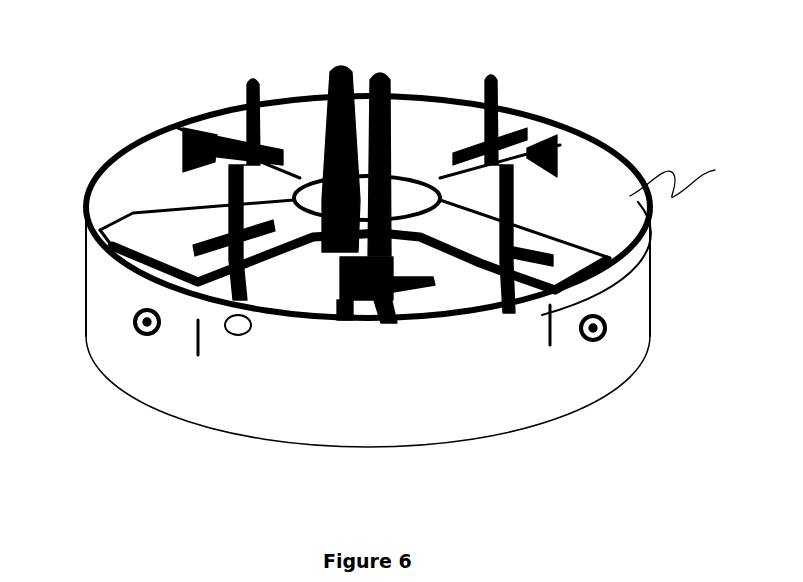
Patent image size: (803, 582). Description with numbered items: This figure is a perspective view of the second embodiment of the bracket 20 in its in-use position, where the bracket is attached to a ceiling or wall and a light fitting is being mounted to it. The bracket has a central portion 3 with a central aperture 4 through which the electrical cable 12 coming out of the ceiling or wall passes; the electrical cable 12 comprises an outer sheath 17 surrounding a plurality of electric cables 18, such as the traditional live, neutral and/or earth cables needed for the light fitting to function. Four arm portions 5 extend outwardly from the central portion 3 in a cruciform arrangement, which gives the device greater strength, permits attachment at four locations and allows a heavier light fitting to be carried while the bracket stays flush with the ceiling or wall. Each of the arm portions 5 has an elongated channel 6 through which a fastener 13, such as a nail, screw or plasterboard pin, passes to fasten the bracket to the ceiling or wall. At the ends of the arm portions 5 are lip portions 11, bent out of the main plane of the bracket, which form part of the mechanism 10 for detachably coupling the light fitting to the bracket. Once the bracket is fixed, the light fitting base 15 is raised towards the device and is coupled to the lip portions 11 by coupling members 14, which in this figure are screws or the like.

The central portion 3 is at (357, 230).
The central aperture 4 is at (400, 195).
The arm portions 5 is at (575, 181).
The elongated channels 6 is at (227, 133).
The mechanism 10 is at (137, 132).
The lip portions 11 is at (188, 148).
The electrical cable 12 is at (358, 113).
The fasteners 13 is at (240, 190).
The coupling members 14 is at (140, 320).
The light fitting base 15 is at (367, 387).
The outer sheath 17 is at (377, 258).
The electric cables 18 is at (370, 320).
The bracket of the second embodiment 20 is at (640, 231).